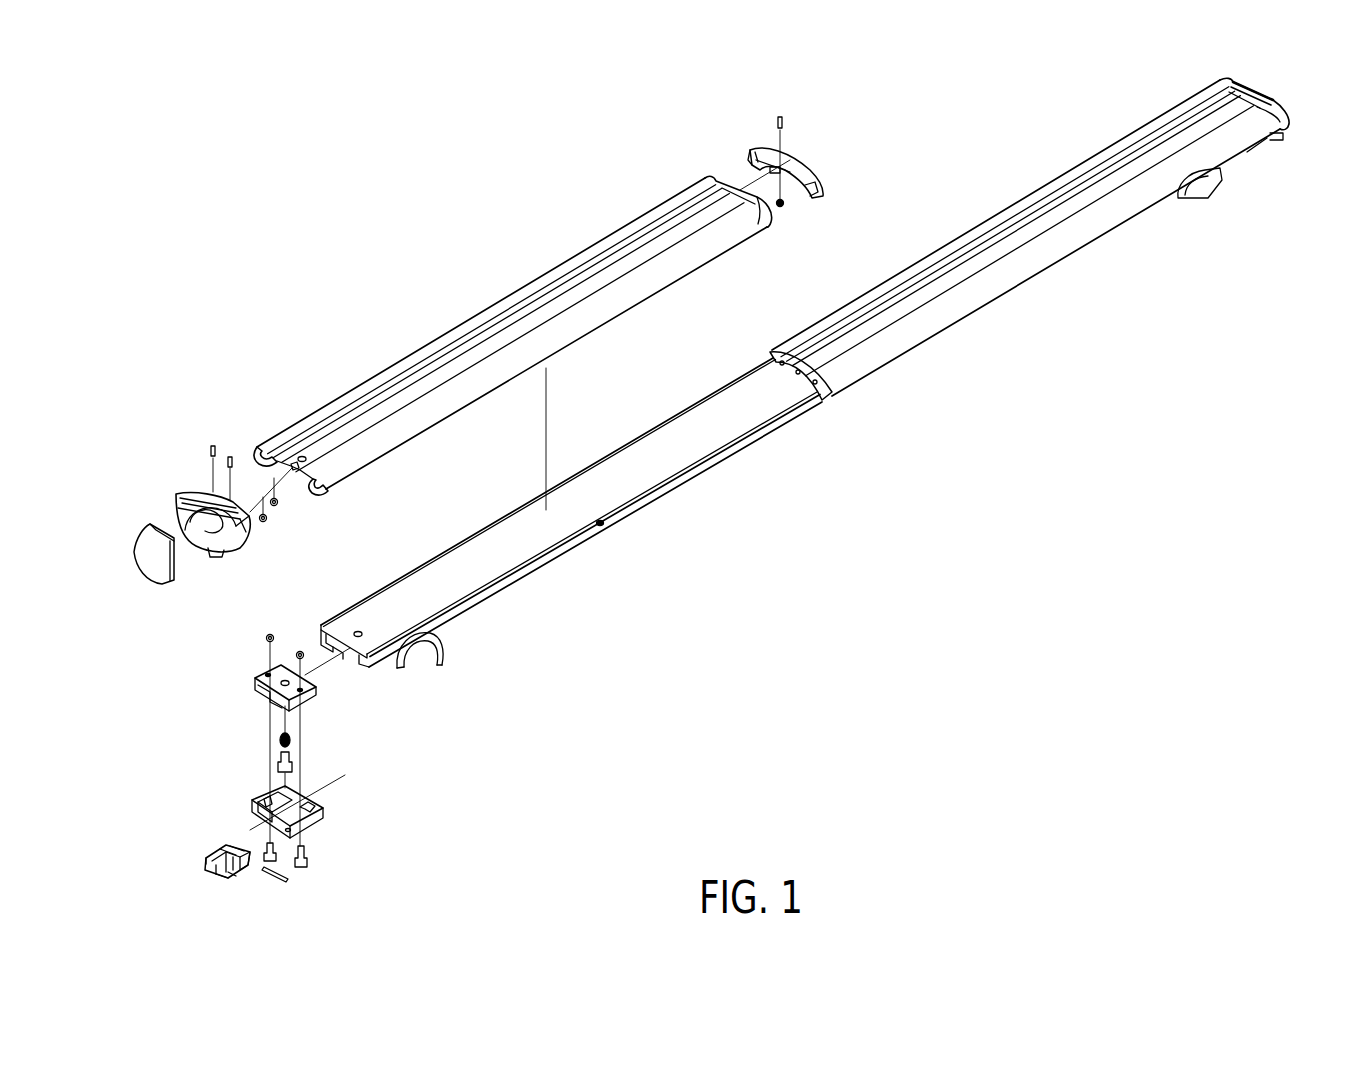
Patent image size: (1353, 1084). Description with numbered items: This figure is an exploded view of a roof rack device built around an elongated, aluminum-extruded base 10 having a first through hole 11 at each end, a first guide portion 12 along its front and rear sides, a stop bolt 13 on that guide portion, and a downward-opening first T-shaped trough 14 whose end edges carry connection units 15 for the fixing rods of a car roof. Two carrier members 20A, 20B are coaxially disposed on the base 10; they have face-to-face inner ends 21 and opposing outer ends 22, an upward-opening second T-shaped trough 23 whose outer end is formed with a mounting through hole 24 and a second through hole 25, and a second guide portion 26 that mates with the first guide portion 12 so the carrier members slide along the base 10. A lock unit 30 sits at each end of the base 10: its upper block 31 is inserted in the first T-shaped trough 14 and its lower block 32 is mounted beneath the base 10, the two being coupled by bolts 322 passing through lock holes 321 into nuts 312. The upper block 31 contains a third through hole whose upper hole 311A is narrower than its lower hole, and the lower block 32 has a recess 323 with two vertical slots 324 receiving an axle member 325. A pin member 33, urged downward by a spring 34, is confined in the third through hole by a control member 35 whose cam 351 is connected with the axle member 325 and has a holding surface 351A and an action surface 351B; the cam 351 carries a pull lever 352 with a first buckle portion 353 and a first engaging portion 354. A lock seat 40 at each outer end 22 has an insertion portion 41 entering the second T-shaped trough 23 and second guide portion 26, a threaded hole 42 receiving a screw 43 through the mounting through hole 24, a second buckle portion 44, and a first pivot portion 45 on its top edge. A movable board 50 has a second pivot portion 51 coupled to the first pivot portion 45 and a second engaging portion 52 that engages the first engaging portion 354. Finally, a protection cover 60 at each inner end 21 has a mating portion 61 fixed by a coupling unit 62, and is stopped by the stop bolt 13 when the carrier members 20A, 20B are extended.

The base 10 is at (571, 560).
The first through hole 11 is at (358, 631).
The first guide portion 12 is at (500, 515).
The stop bolt 13 is at (602, 524).
The first T-shaped trough 14 is at (352, 655).
The connection unit 15 is at (441, 658).
The carrier member 20A is at (467, 330).
The carrier member 20B is at (1005, 210).
The inner end 21 is at (757, 199).
The outer end 22 is at (330, 491).
The second T-shaped trough 23 is at (294, 468).
The mounting through hole 24 is at (290, 454).
The second through hole 25 is at (304, 457).
The second guide portion 26 is at (262, 448).
The lock unit 30 is at (260, 763).
The upper block 31 is at (234, 649).
The upper hole 311A is at (287, 678).
The nut 312 is at (263, 639).
The lower block 32 is at (322, 823).
The lock hole 321 is at (266, 797).
The bolt 322 is at (307, 858).
The recess 323 is at (282, 830).
The vertical slot 324 is at (300, 802).
The axle member 325 is at (273, 874).
The pin member 33 is at (290, 757).
The spring 34 is at (290, 735).
The control member 35 is at (188, 843).
The cam 351 is at (250, 864).
The holding surface 351A is at (240, 842).
The action surface 351B is at (250, 842).
The pull lever 352 is at (237, 881).
The first buckle portion 353 is at (205, 848).
The first engaging portion 354 is at (223, 878).
The lock seat 40 is at (705, 353).
The insertion portion 41 is at (254, 528).
The threaded hole 42 is at (231, 456).
The screw 43 is at (213, 442).
The second buckle portion 44 is at (206, 548).
The first pivot portion 45 is at (206, 512).
The movable board 50 is at (146, 582).
The second pivot portion 51 is at (176, 543).
The second engaging portion 52 is at (172, 582).
The protection cover 60 is at (786, 264).
The mating portion 61 is at (750, 155).
The coupling unit 62 is at (777, 117).